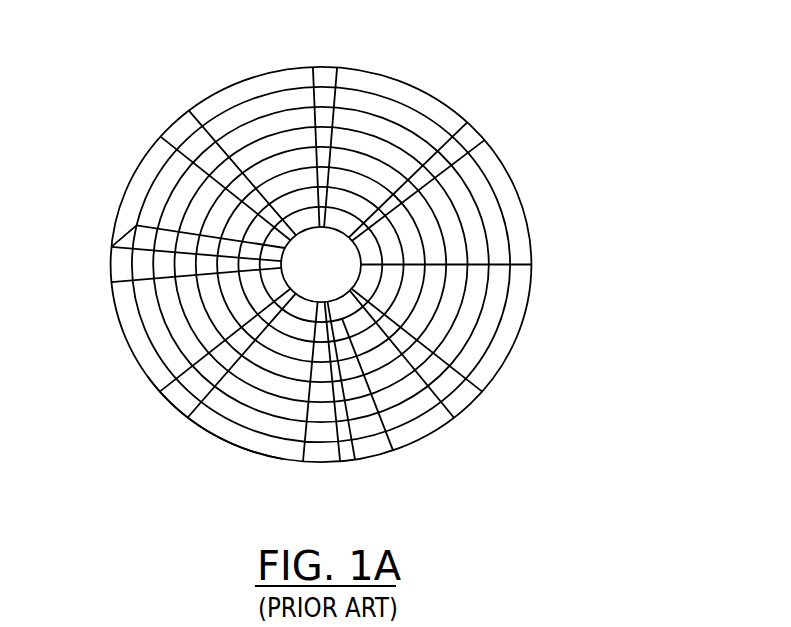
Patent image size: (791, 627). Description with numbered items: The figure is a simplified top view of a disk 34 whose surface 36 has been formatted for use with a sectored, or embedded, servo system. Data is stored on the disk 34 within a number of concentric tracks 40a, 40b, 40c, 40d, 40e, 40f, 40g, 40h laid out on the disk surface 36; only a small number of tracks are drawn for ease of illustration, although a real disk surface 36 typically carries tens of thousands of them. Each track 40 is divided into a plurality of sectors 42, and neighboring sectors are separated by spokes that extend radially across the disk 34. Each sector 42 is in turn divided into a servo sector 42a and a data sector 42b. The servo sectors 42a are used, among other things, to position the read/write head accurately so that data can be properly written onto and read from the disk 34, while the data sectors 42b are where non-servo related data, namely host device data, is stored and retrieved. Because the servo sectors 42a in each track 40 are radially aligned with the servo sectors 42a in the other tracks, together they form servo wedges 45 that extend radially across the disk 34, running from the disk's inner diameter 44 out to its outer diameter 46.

The disk 34 is at (321, 248).
The surface 36 is at (298, 240).
The track 40 is at (487, 193).
The track 40a is at (358, 78).
The track 40b is at (392, 110).
The track 40c is at (402, 135).
The track 40d is at (400, 160).
The track 40e is at (443, 423).
The track 40f is at (427, 434).
The track 40g is at (393, 452).
The track 40h is at (355, 466).
The sector 42 is at (533, 262).
The servo sector 42a is at (187, 422).
The data sector 42b is at (107, 286).
The inner diameter 44 is at (296, 288).
The servo wedge 45 is at (200, 235).
The outer diameter 46 is at (220, 444).